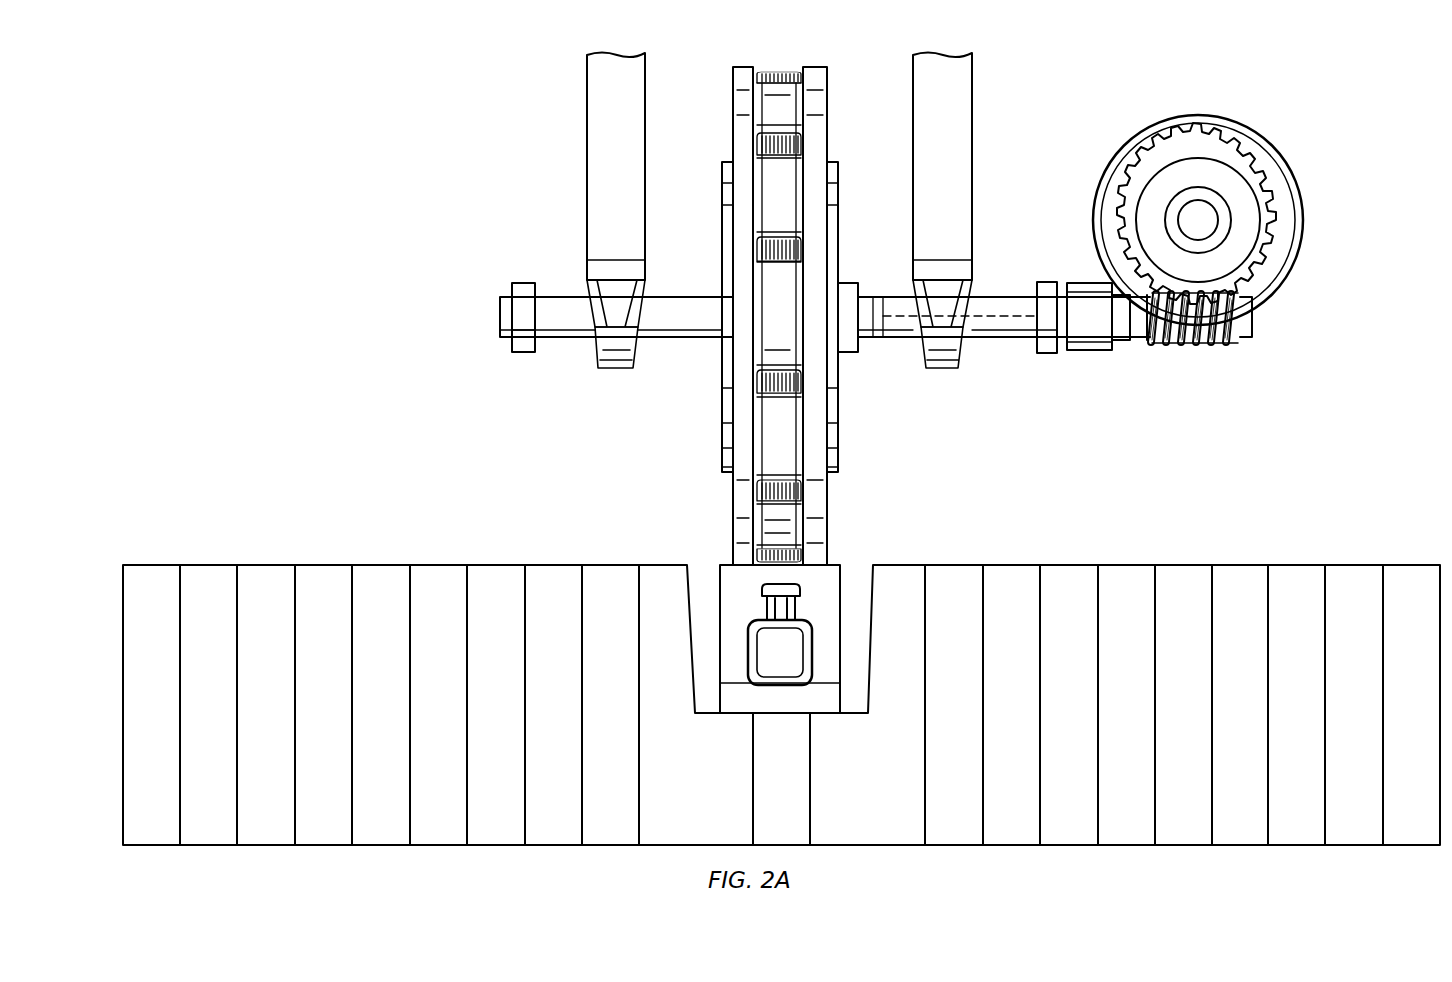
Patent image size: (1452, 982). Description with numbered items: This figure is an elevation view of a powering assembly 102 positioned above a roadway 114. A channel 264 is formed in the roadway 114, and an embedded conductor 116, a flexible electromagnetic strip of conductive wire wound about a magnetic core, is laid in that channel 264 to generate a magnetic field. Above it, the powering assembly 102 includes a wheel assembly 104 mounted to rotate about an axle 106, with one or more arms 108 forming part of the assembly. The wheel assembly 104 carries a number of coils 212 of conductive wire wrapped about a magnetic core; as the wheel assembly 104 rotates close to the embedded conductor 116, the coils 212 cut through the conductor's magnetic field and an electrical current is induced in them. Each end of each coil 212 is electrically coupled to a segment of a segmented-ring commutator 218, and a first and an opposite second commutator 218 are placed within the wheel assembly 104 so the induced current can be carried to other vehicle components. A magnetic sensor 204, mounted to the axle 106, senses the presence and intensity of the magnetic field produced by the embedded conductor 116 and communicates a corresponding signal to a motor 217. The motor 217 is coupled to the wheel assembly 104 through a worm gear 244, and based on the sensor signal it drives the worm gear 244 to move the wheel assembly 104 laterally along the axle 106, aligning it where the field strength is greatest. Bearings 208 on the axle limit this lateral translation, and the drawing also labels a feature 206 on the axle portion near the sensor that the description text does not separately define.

The powering assembly 102 is at (344, 184).
The wheel assembly 104 is at (826, 84).
The axle 106 is at (568, 338).
The arms 108 is at (614, 369).
The roadway 114 is at (1246, 566).
The embedded conductor 116 is at (779, 690).
The magnetic sensor 204 is at (886, 301).
The shaft bore 206 is at (907, 341).
The bearings 208 is at (522, 283).
The coils 212 is at (777, 66).
The motor 217 is at (1206, 118).
The segmented-ring commutator 218 is at (722, 174).
The worm gear 244 is at (1283, 318).
The channel 264 is at (699, 592).